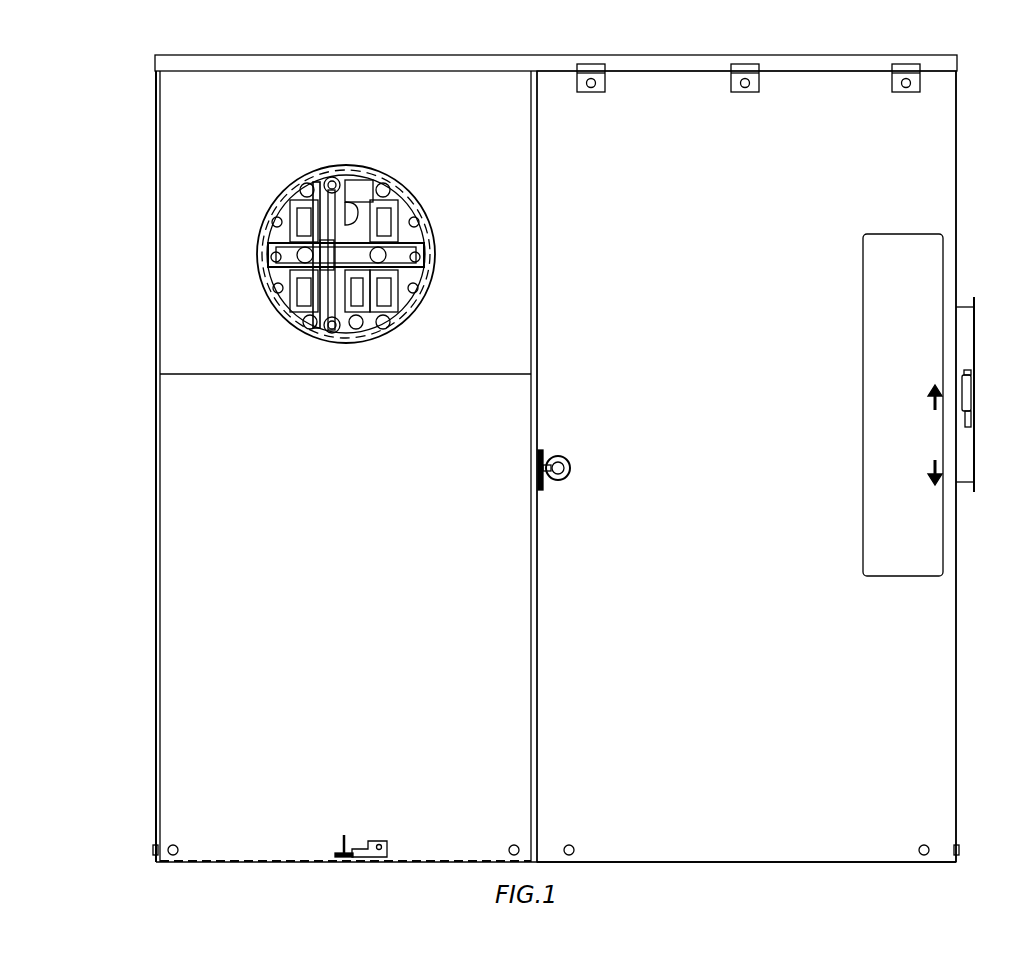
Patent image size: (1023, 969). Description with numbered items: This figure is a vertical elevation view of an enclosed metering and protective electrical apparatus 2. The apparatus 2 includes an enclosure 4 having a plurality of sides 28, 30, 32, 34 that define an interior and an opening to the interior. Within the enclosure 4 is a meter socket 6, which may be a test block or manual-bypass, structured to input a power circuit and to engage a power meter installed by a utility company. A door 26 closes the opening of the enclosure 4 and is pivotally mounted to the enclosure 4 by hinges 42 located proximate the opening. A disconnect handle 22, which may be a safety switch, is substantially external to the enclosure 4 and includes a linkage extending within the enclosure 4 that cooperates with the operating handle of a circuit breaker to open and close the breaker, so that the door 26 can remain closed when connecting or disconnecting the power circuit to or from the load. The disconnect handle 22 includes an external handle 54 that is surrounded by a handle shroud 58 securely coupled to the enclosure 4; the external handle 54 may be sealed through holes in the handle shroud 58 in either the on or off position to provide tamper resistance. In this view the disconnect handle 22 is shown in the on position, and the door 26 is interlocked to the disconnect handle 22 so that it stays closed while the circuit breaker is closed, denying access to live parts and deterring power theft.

The enclosed metering and protective electrical apparatus 2 is at (138, 255).
The enclosure 4 is at (140, 112).
The meter socket 6 is at (372, 172).
The disconnect handle 22 is at (998, 312).
The door 26 is at (563, 725).
The side 28 is at (156, 630).
The side 30 is at (505, 55).
The side 32 is at (956, 709).
The side 34 is at (740, 863).
The hinges 42 is at (588, 64).
The external handle 54 is at (966, 385).
The handle shroud 58 is at (975, 462).